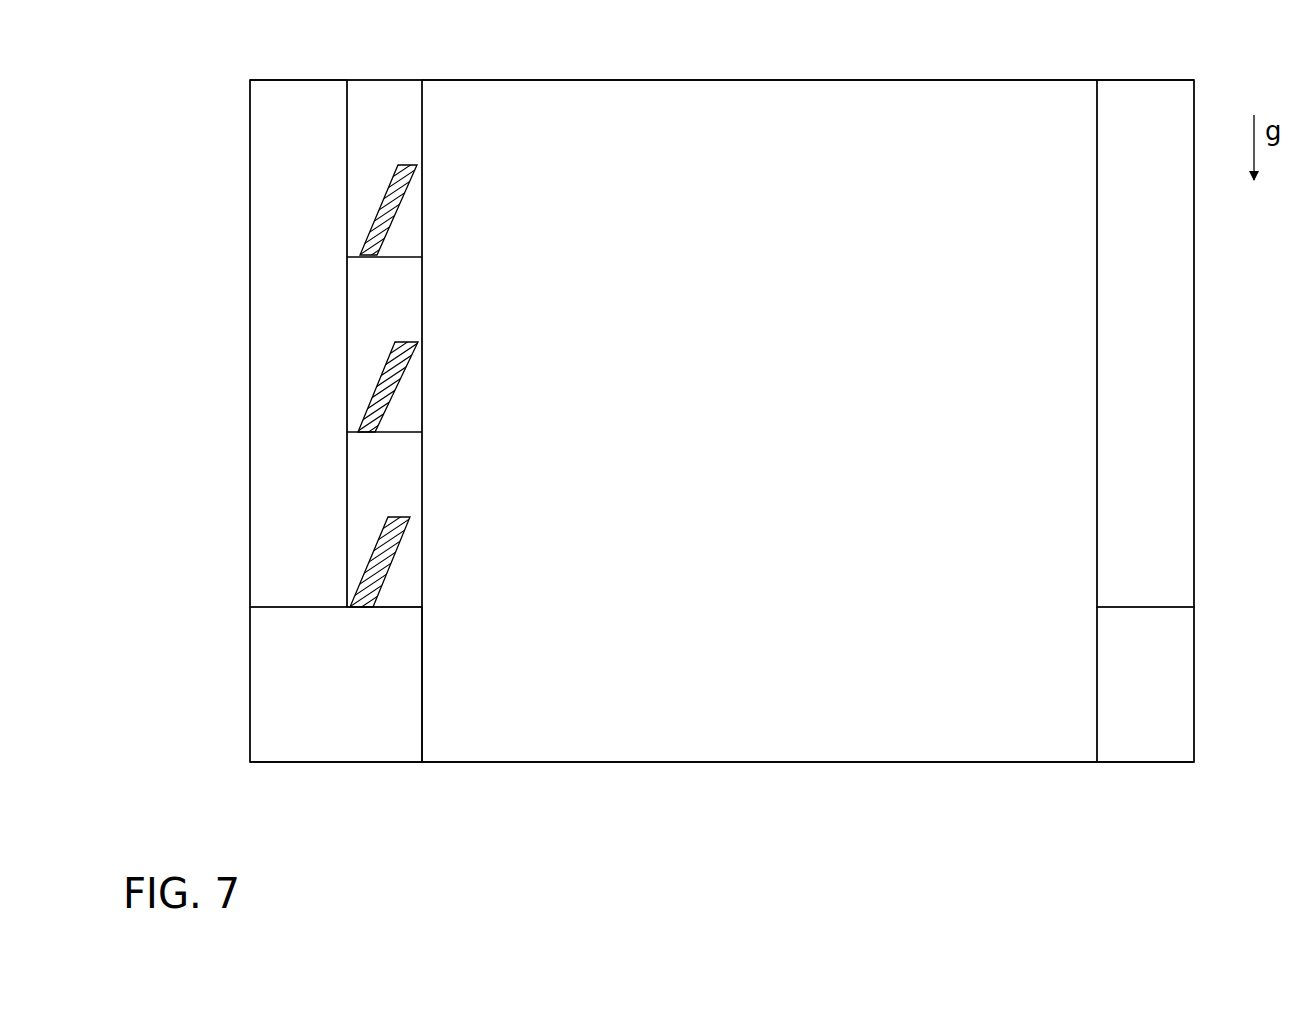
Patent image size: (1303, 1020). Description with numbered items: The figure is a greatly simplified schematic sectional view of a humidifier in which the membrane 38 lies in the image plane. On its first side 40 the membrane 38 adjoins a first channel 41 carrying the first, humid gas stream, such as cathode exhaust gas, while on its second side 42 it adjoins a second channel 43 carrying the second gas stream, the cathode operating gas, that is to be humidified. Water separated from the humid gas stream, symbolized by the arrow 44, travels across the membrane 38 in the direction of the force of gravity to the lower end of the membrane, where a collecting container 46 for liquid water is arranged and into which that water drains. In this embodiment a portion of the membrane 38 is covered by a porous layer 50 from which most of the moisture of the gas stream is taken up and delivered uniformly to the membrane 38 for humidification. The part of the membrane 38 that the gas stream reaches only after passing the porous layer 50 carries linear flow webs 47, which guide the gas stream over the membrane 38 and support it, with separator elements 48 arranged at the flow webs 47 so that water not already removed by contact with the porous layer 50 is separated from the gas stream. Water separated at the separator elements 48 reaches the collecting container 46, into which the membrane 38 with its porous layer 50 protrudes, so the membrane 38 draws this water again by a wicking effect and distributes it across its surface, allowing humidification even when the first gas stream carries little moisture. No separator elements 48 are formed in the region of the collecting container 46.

The membrane 38 is at (405, 98).
The first side 40 is at (799, 80).
The second side 42 is at (799, 80).
The first channel 41 is at (1177, 269).
The second channel 43 is at (263, 438).
The arrow 44 is at (1144, 766).
The collecting container 46 is at (278, 697).
The flow webs 47 is at (353, 432).
The separator elements 48 is at (383, 215).
The porous layer 50 is at (987, 98).